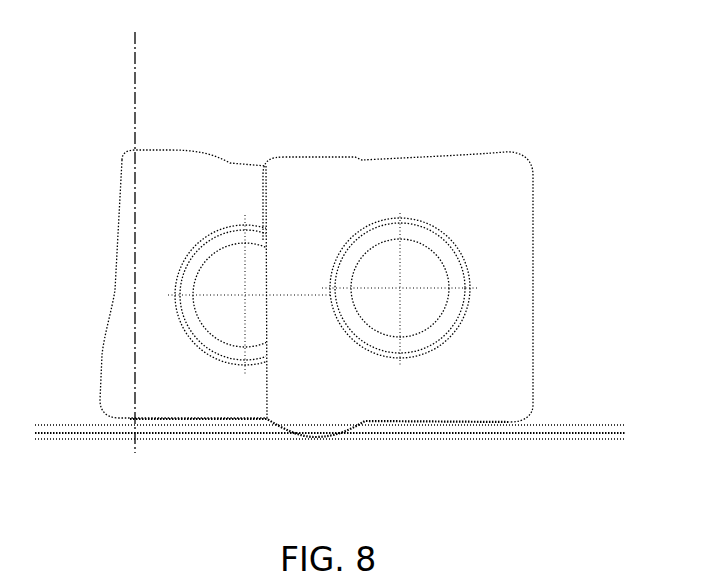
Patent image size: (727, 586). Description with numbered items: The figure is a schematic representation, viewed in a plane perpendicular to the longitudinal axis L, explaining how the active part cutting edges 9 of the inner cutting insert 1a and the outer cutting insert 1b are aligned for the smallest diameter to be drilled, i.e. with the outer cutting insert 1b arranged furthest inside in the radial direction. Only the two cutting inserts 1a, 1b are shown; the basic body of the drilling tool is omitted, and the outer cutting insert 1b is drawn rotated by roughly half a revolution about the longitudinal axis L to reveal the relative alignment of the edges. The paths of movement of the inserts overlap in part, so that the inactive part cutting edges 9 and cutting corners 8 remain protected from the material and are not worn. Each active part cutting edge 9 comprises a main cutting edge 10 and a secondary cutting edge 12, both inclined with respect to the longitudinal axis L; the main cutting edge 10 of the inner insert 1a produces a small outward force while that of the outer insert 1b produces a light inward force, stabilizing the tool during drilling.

The longitudinal axis L is at (135, 108).
The inner cutting insert 1a is at (183, 178).
The outer cutting insert 1b is at (453, 193).
The cutting corner 8 is at (108, 412).
The active part cutting edge 9 is at (203, 419).
The main cutting edge 10 is at (329, 438).
The secondary cutting edge 12 is at (150, 418).